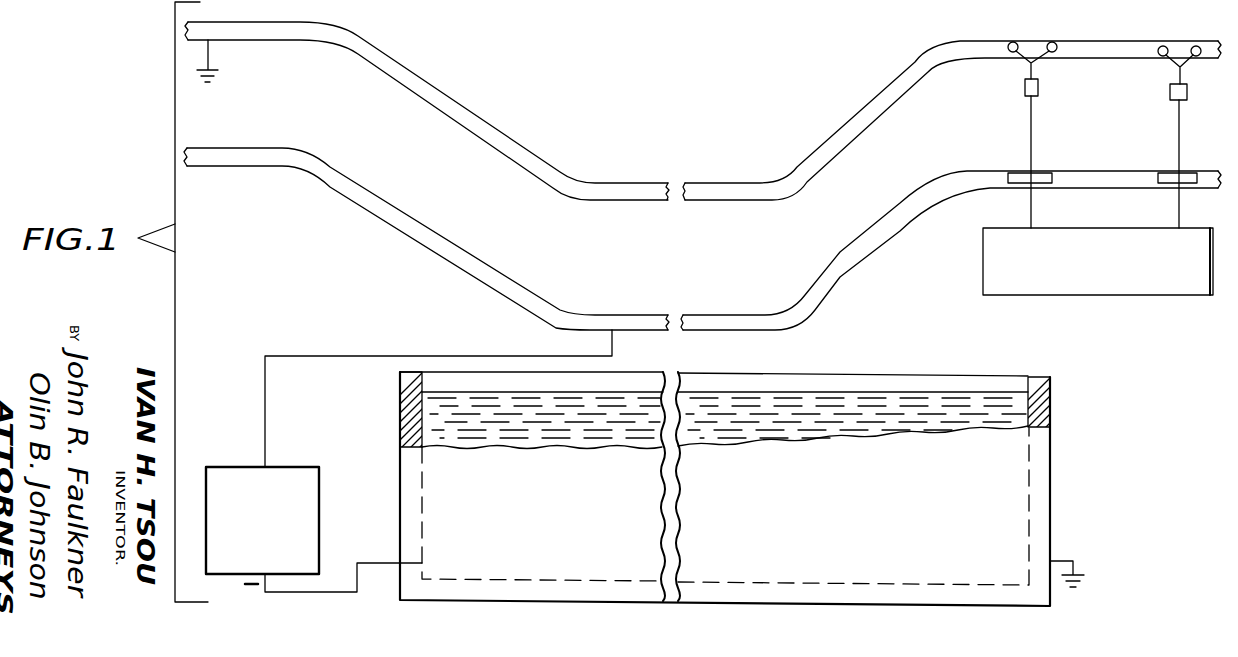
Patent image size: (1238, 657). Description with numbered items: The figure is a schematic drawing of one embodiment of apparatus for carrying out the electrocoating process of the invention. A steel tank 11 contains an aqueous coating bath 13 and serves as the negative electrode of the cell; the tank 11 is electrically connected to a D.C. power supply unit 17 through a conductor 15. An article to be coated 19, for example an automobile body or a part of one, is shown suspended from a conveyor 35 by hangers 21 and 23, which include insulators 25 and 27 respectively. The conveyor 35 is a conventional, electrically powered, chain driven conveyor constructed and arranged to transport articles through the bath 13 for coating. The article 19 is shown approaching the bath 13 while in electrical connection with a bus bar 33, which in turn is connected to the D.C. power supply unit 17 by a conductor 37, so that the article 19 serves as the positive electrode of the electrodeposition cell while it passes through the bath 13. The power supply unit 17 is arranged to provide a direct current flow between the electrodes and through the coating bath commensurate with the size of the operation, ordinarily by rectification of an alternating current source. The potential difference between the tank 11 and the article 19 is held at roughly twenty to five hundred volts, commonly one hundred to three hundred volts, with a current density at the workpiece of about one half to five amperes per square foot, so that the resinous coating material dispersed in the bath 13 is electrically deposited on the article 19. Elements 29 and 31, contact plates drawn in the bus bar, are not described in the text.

The steel tank 11 is at (1052, 460).
The aqueous coating bath 13 is at (725, 420).
The conductor 15 is at (370, 563).
The D.C. power supply unit 17 is at (262, 525).
The article to be coated 19 is at (1087, 296).
The hanger 21 is at (1028, 203).
The hanger 23 is at (1175, 205).
The insulator 25 is at (1025, 86).
The insulator 27 is at (1170, 90).
The contact plate 29 is at (1015, 172).
The contact plate 31 is at (1160, 172).
The bus bar 33 is at (685, 315).
The conveyor 35 is at (687, 183).
The conductor 37 is at (328, 356).